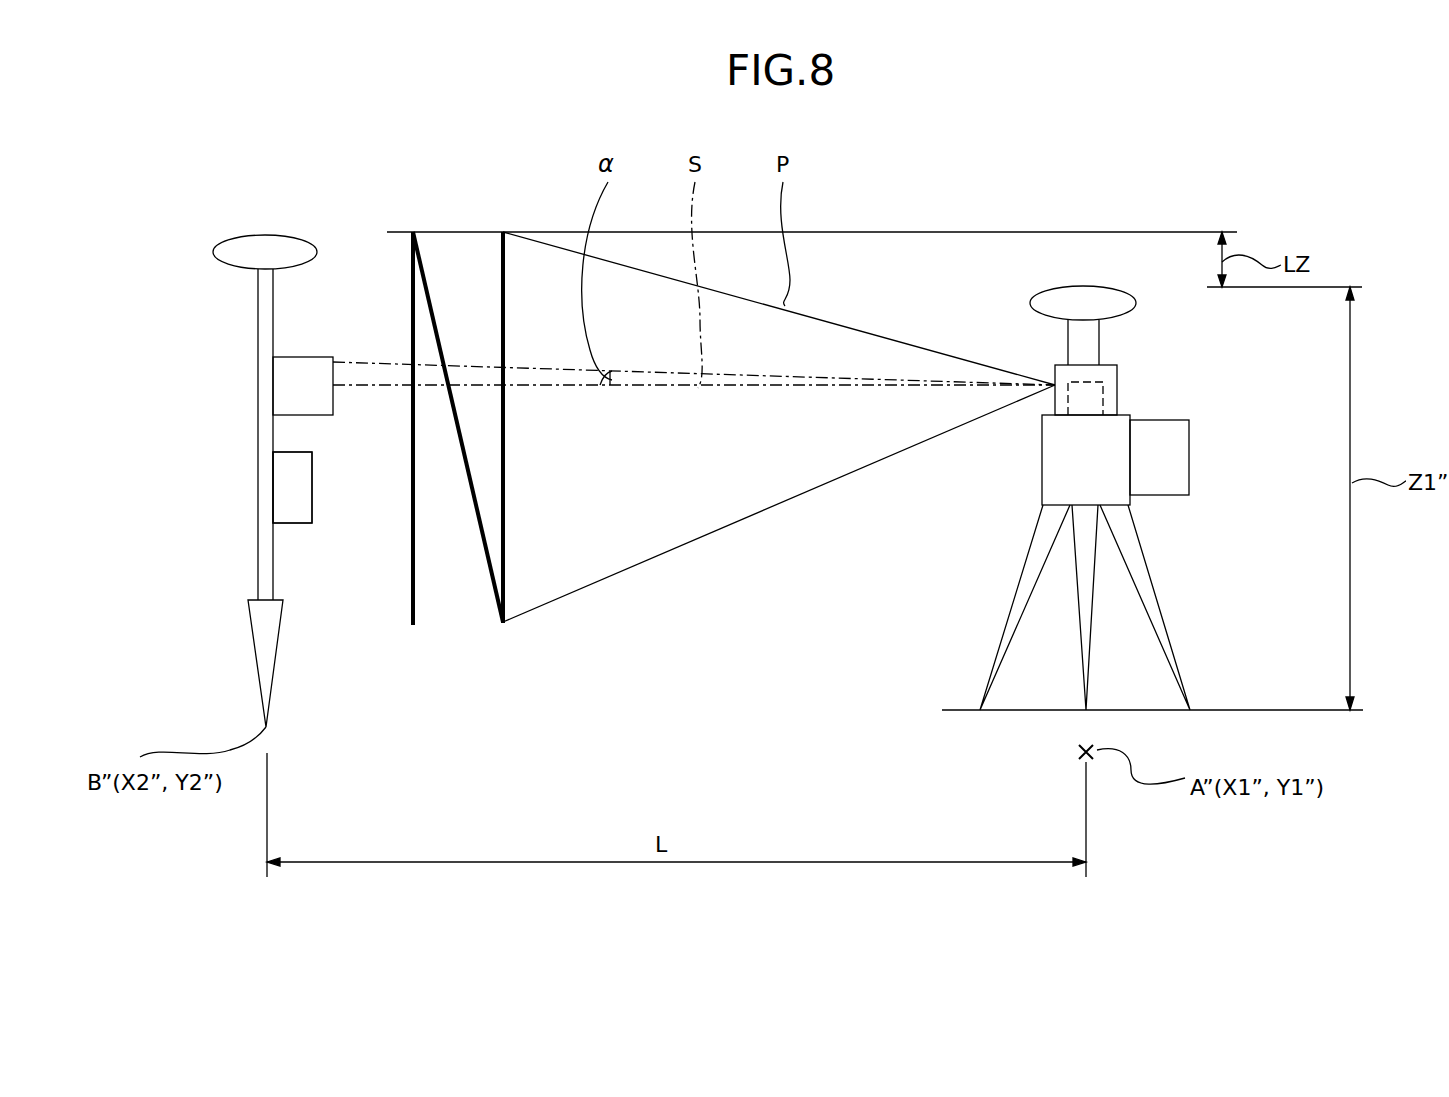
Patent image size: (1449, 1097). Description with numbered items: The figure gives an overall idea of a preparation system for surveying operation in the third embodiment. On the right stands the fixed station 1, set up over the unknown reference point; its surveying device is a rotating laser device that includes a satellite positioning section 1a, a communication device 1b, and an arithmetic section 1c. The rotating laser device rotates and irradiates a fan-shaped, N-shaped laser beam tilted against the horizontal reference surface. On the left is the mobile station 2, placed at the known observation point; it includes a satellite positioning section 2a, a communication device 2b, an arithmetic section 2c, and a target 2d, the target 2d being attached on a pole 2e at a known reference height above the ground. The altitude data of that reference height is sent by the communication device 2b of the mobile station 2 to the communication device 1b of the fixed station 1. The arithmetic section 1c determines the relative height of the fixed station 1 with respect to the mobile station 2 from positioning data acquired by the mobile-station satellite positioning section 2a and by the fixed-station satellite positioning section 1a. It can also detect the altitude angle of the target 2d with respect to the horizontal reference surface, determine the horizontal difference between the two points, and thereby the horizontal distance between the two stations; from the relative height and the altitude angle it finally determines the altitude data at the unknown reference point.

The fixed station 1 is at (1132, 413).
The satellite positioning section 1a is at (1040, 291).
The communication device 1b is at (1190, 458).
The arithmetic section 1c is at (1159, 457).
The mobile station 2 is at (190, 283).
The satellite positioning section 2a is at (262, 236).
The communication device 2b is at (294, 523).
The arithmetic section 2c is at (292, 487).
The target 2d is at (298, 356).
The pole 2e is at (258, 484).